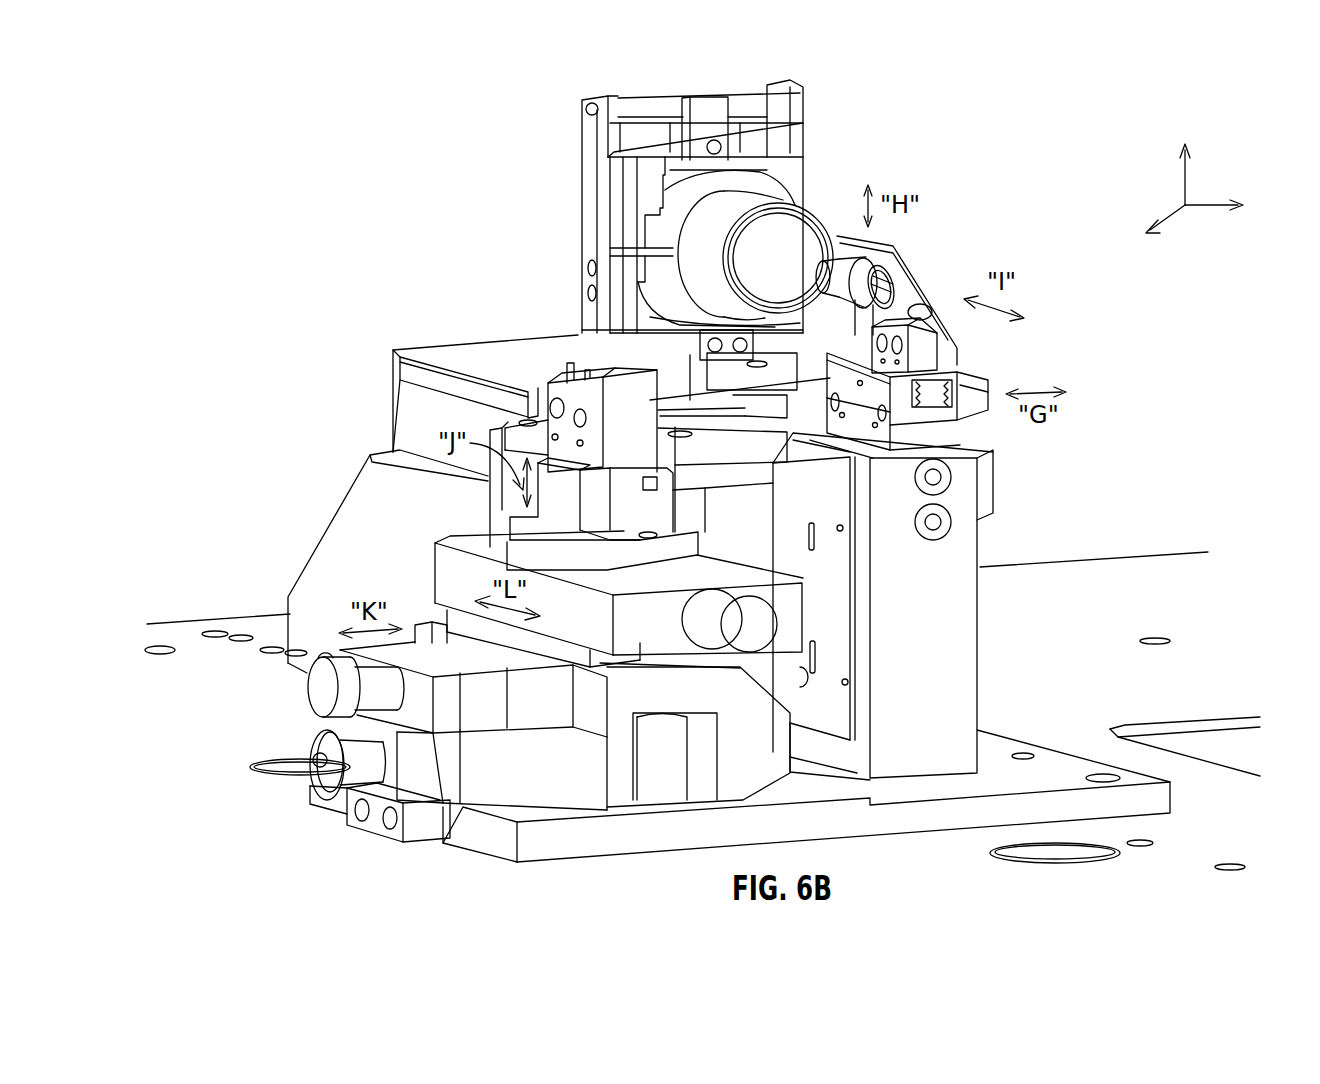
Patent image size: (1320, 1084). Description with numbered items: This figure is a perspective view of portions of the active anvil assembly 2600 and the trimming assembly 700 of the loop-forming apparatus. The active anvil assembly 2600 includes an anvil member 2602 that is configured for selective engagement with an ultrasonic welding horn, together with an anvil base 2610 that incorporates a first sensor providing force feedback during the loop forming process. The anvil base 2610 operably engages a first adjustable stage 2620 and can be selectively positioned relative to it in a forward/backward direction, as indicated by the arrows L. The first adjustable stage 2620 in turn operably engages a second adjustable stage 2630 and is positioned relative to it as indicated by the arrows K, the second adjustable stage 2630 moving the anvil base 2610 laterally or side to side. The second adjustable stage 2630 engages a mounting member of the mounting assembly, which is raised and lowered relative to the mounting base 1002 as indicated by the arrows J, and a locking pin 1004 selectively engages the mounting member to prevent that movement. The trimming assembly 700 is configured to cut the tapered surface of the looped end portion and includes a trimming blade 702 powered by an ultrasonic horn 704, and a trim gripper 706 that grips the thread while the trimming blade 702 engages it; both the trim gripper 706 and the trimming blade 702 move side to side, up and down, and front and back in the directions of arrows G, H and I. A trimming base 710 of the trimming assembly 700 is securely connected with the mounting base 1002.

The trimming assembly 700 is at (1060, 198).
The trimming blade 702 is at (886, 280).
The ultrasonic horn 704 is at (790, 234).
The trim gripper 706 is at (966, 352).
The trimming base 710 is at (964, 630).
The mounting base 1002 is at (593, 835).
The locking pin 1004 is at (260, 746).
The active anvil assembly 2600 is at (294, 535).
The anvil member 2602 is at (545, 392).
The anvil base 2610 is at (530, 536).
The first adjustable stage 2620 is at (673, 630).
The second adjustable stage 2630 is at (542, 695).